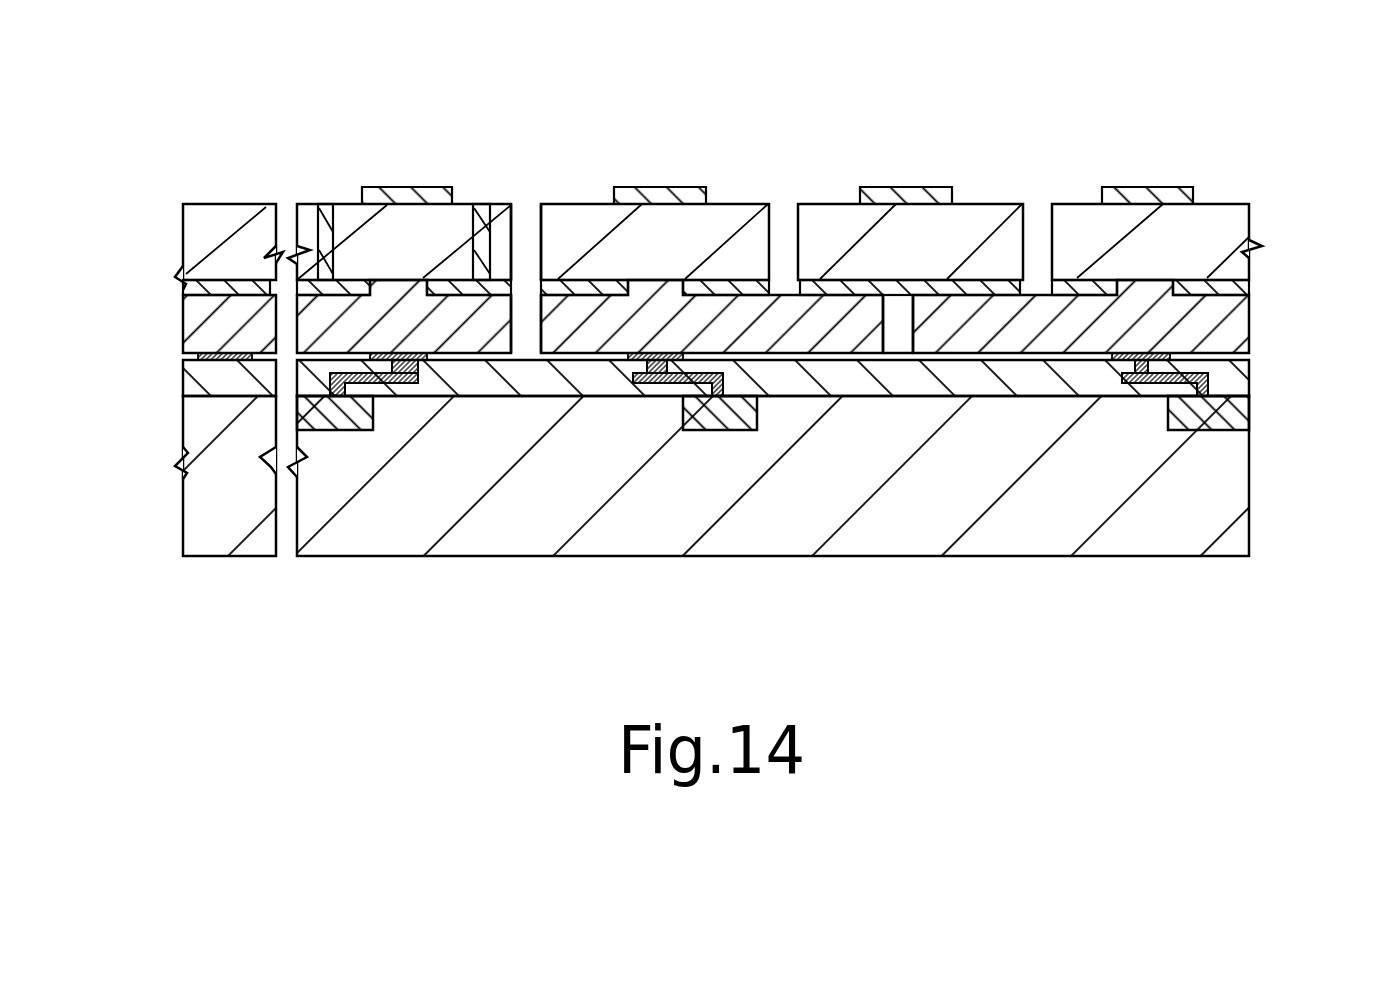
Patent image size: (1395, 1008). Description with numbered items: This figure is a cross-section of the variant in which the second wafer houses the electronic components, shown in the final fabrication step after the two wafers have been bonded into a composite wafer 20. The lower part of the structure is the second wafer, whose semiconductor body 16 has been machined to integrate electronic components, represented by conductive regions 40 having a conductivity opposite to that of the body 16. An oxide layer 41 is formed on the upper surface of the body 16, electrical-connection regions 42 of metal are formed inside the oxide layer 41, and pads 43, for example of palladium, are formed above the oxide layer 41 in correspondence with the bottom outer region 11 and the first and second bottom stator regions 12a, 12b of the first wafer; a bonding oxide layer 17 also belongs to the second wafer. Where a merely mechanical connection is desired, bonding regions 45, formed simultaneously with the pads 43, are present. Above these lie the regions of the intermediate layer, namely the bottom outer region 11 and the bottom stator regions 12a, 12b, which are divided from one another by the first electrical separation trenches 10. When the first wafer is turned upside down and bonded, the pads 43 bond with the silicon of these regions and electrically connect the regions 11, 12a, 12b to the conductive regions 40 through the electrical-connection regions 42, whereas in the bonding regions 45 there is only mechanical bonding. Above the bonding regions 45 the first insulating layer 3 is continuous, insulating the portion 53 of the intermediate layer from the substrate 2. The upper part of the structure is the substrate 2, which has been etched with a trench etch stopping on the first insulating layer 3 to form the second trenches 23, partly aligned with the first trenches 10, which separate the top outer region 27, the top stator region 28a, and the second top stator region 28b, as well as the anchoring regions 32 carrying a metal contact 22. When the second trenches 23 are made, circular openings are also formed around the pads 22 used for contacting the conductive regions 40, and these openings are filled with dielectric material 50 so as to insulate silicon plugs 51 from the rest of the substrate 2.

The substrate 2 is at (232, 222).
The first insulating layer 3 is at (733, 287).
The first electrical separation trenches 10 is at (535, 327).
The bottom outer region 11 is at (357, 313).
The first bottom stator region 12a is at (656, 468).
The second bottom stator region 12b is at (1217, 322).
The semiconductor body 16 is at (1213, 512).
The bonding oxide layer 17 is at (490, 378).
The composite wafer 20 is at (719, 333).
The metal contact 22 is at (400, 197).
The second trenches 23 is at (523, 217).
The top outer region 27 is at (521, 232).
The top stator region 28a is at (710, 213).
The second top stator region 28b is at (1087, 222).
The anchoring regions 32 is at (828, 220).
The conductive regions 40 is at (337, 420).
The oxide layer 41 is at (656, 484).
The electrical-connection regions 42 is at (383, 380).
The pads 43 is at (432, 372).
The bonding regions 45 is at (197, 359).
The dielectric material 50 is at (322, 277).
The silicon plugs 51 is at (427, 242).
The portion of the intermediate layer 53 is at (210, 313).